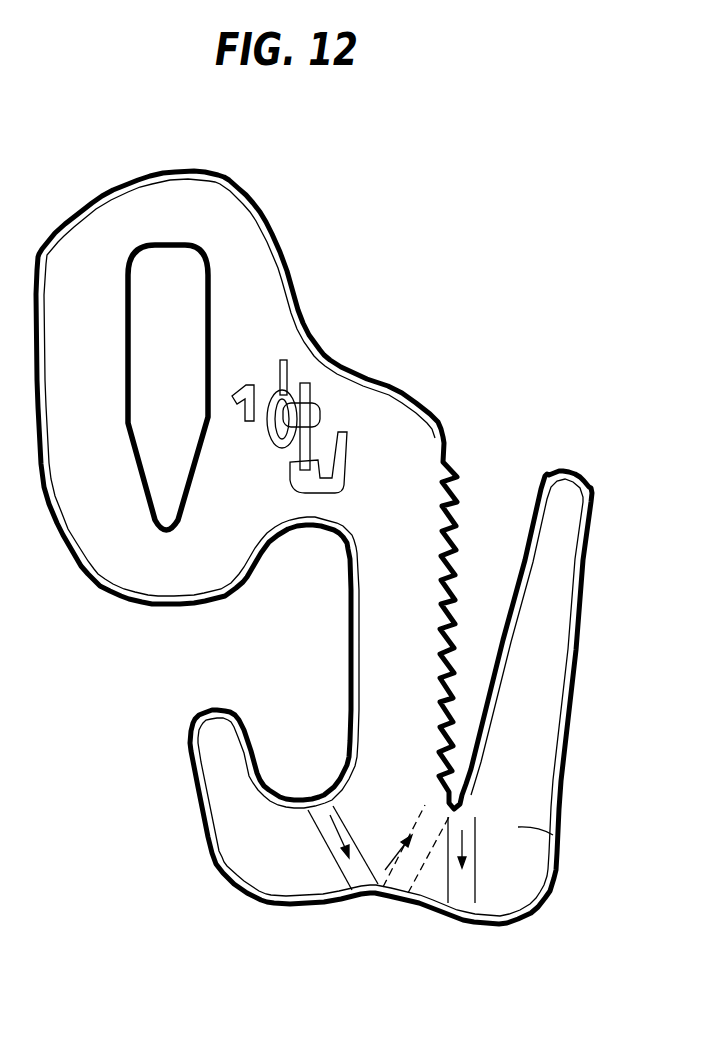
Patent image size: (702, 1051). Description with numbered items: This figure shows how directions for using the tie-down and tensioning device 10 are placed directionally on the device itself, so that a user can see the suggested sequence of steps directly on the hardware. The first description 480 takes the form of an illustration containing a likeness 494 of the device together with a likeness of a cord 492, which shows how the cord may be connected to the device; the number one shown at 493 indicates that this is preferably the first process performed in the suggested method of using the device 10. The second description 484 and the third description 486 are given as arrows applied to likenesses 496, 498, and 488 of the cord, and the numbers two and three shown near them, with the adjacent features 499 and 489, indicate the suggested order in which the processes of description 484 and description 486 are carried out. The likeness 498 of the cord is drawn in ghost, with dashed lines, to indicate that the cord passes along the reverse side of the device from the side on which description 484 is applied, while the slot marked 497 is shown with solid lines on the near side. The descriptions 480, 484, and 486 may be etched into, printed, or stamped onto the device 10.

The tie-down and tensioning device 10 is at (443, 437).
The description 480 is at (252, 482).
The description 484 is at (373, 916).
The description 486 is at (516, 876).
The likeness of the cord 488 is at (475, 820).
The finger arm 489 is at (553, 842).
The likeness of a cord 492 is at (283, 372).
The number "1" 493 is at (247, 396).
The likeness of the device 494 is at (317, 430).
The likeness of the cord 496 is at (337, 865).
The diagonal slot 497 is at (343, 812).
The likeness of the cord 498 is at (407, 867).
The second indicia region 499 is at (250, 845).